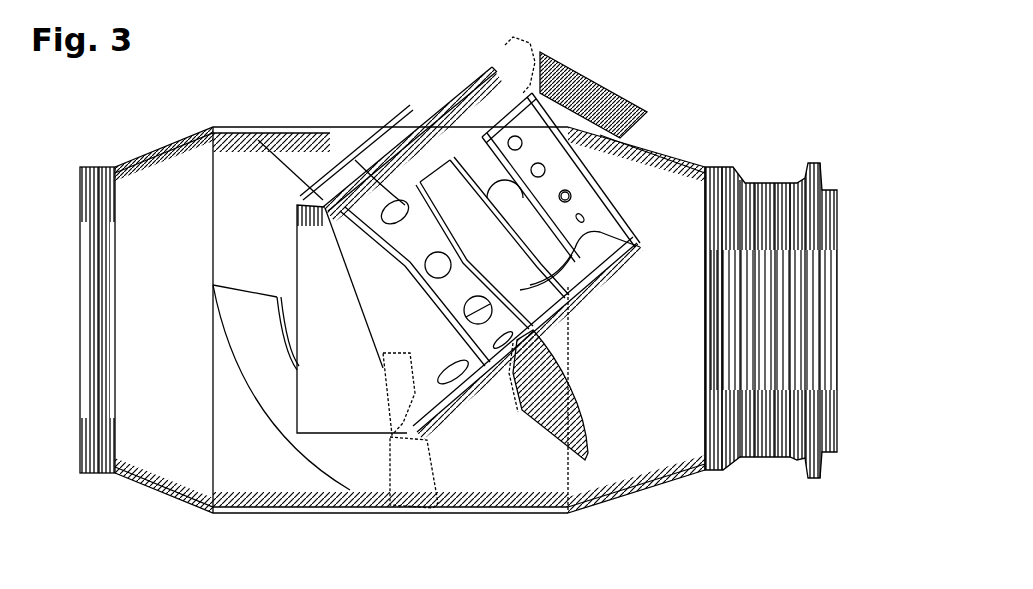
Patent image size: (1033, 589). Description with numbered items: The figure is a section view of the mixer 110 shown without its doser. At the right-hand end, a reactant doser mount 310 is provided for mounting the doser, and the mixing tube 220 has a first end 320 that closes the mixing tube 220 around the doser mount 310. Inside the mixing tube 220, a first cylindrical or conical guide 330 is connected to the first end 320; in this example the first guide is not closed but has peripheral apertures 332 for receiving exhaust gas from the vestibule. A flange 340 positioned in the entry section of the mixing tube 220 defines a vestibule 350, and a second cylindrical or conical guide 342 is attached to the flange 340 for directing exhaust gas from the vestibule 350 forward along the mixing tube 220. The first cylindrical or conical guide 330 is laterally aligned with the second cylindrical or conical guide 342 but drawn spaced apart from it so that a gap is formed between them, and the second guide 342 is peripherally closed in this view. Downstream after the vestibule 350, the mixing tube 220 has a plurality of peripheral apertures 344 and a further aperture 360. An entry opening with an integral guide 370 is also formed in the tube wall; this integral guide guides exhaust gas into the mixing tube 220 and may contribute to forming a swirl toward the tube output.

The mixer 110 is at (90, 128).
The mixing tube 220 is at (604, 344).
The reactant doser mount 310 is at (752, 284).
The first end 320 is at (560, 246).
The first cylindrical or conical guide 330 is at (553, 135).
The apertures 332 is at (525, 112).
The flange 340 is at (386, 220).
The second cylindrical or conical guide 342 is at (458, 192).
The peripheral apertures 344 is at (289, 151).
The vestibule 350 is at (401, 118).
The further aperture 360 is at (489, 455).
The entry opening with integral guide 370 is at (445, 442).